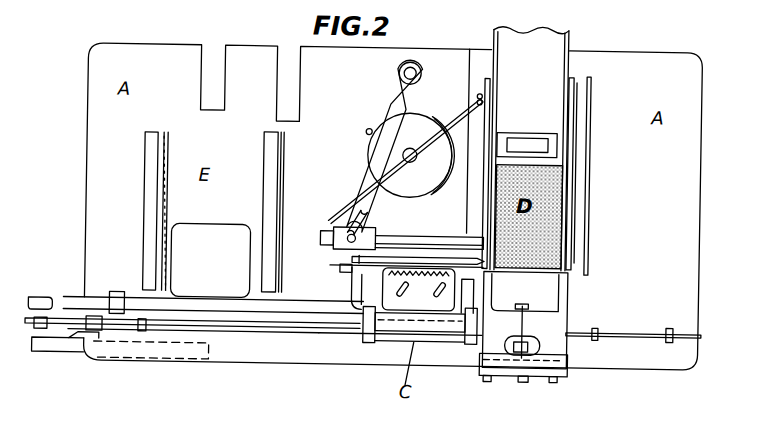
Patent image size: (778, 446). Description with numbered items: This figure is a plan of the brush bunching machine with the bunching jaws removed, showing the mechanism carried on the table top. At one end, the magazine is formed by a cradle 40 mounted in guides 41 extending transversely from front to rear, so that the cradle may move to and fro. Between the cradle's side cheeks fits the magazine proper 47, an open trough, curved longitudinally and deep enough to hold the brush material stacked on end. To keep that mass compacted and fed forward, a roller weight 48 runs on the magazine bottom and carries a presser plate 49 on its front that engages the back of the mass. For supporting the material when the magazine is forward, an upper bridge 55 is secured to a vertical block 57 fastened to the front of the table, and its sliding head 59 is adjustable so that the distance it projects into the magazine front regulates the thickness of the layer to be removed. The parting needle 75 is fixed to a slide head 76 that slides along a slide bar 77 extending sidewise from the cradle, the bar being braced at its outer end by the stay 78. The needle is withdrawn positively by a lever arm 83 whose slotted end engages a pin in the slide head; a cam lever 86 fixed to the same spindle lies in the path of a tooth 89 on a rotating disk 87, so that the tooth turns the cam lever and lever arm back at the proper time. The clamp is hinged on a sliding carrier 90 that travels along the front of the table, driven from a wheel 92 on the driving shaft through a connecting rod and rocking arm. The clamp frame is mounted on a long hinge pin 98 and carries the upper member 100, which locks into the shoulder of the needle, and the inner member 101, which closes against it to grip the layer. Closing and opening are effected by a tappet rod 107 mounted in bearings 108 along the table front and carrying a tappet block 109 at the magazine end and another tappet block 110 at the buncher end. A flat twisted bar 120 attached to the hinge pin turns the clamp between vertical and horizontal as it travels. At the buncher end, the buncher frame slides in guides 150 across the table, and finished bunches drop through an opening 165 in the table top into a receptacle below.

The cradle 40 is at (576, 219).
The guides 41 is at (582, 257).
The magazine proper 47 is at (562, 66).
The roller weight 48 is at (527, 130).
The presser plate 49 is at (548, 162).
The upper bridge 55 is at (558, 336).
The vertical block 57 is at (531, 377).
The sliding head 59 is at (558, 284).
The parting needle 75 is at (418, 254).
The slide head 76 is at (372, 234).
The slide bar 77 is at (447, 245).
The stay 78 is at (458, 118).
The lever arm 83 is at (377, 164).
The cam lever 86 is at (394, 90).
The disk 87 is at (411, 155).
The tooth 89 is at (365, 132).
The sliding carrier 90 is at (389, 342).
The wheel 92 is at (82, 354).
The hinge pin 98 is at (352, 320).
The upper member 100 is at (358, 266).
The inner member 101 is at (418, 289).
The tappet rod 107 is at (124, 330).
The bearings 108 is at (47, 337).
The tappet block 109 is at (597, 325).
The tappet block 110 is at (145, 336).
The bar 120 is at (230, 312).
The guides 150 is at (144, 228).
The opening 165 is at (210, 260).